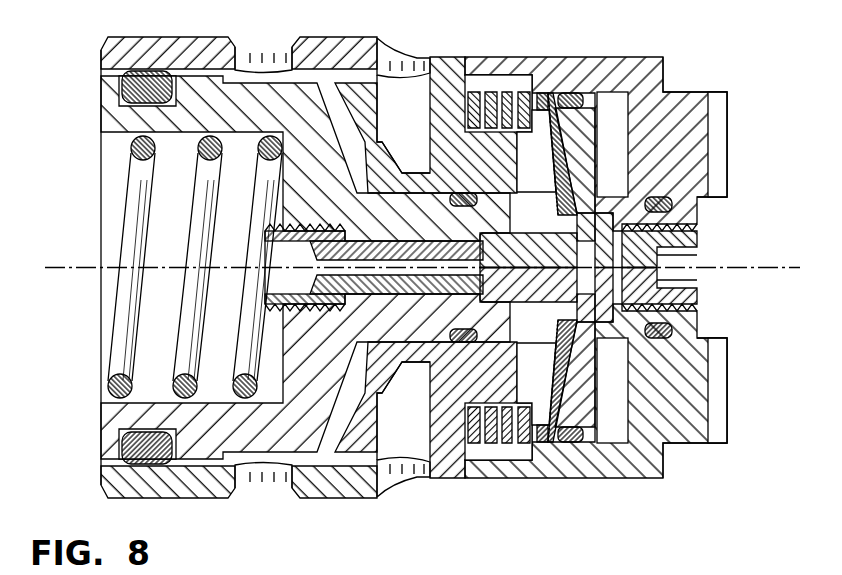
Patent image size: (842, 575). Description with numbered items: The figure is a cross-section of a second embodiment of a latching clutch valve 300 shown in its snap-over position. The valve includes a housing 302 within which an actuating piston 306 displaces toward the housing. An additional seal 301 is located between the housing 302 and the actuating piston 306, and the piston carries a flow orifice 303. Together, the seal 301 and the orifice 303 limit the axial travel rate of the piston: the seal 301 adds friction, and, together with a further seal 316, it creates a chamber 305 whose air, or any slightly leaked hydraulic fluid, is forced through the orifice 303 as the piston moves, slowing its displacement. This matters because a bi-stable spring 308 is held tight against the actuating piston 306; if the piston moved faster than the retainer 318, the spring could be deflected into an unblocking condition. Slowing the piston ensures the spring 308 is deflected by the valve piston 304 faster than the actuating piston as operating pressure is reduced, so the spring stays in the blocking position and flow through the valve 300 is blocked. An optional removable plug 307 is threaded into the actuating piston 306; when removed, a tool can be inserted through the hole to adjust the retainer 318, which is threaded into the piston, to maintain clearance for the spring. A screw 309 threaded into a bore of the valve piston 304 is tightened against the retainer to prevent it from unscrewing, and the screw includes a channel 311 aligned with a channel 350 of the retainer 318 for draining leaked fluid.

The latching clutch valve 300 is at (92, 141).
The additional seal 301 is at (567, 92).
The housing 302 is at (643, 453).
The flow orifice 303 is at (597, 397).
The valve piston 304 is at (283, 90).
The chamber 305 is at (610, 122).
The actuating piston 306 is at (697, 210).
The removable plug 307 is at (697, 231).
The bi-stable spring 308 is at (550, 443).
The screw 309 is at (268, 300).
The channel 311 is at (388, 262).
The seal 316 is at (667, 190).
The retainer 318 is at (529, 140).
The channel 350 is at (500, 270).